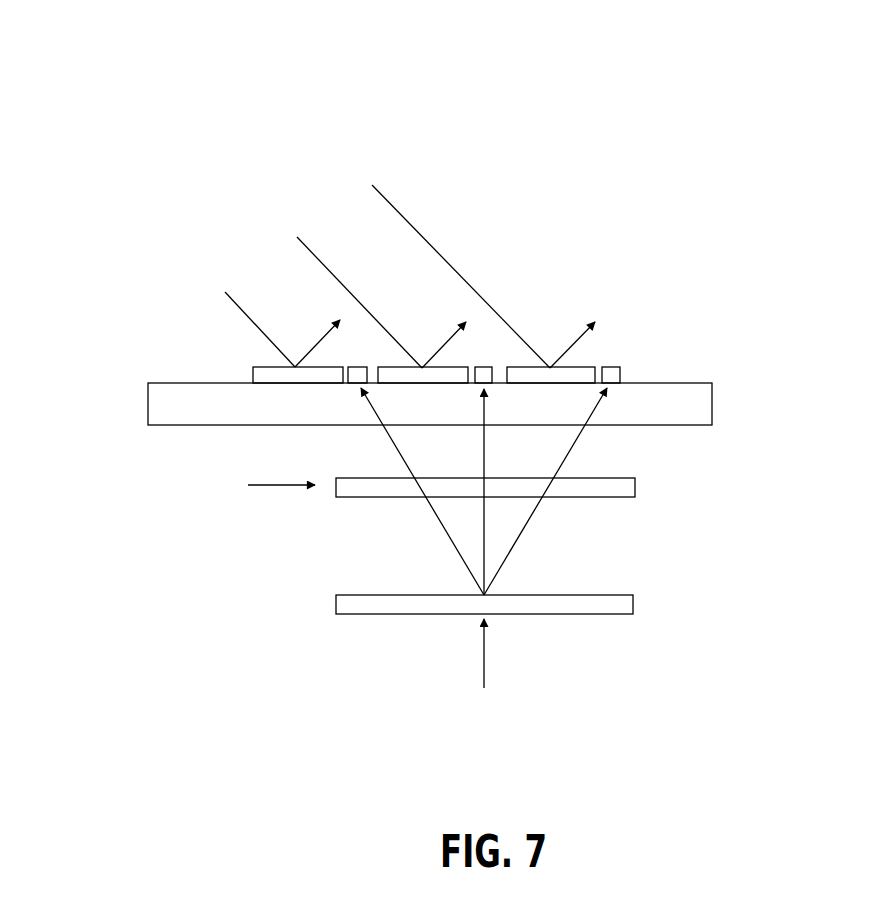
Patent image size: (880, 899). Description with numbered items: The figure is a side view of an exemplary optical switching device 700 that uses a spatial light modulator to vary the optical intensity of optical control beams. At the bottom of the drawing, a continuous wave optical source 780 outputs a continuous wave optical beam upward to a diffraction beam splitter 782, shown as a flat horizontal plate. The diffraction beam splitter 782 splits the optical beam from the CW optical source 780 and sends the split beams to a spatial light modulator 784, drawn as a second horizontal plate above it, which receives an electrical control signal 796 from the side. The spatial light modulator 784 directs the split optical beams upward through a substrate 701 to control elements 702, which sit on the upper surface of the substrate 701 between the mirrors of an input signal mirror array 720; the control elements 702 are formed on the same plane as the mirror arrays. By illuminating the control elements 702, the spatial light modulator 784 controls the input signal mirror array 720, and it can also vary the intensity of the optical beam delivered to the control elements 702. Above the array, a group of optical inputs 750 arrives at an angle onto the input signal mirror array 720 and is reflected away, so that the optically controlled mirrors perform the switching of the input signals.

The optical switching device 700 is at (655, 95).
The substrate 701 is at (700, 408).
The control elements 702 is at (620, 380).
The input signal mirror array 720 is at (258, 367).
The optical inputs 750 is at (347, 154).
The continuous wave (CW) optical source 780 is at (510, 672).
The diffraction beam splitter 782 is at (619, 615).
The spatial light modulator 784 is at (620, 497).
The electrical control signal 796 is at (172, 500).